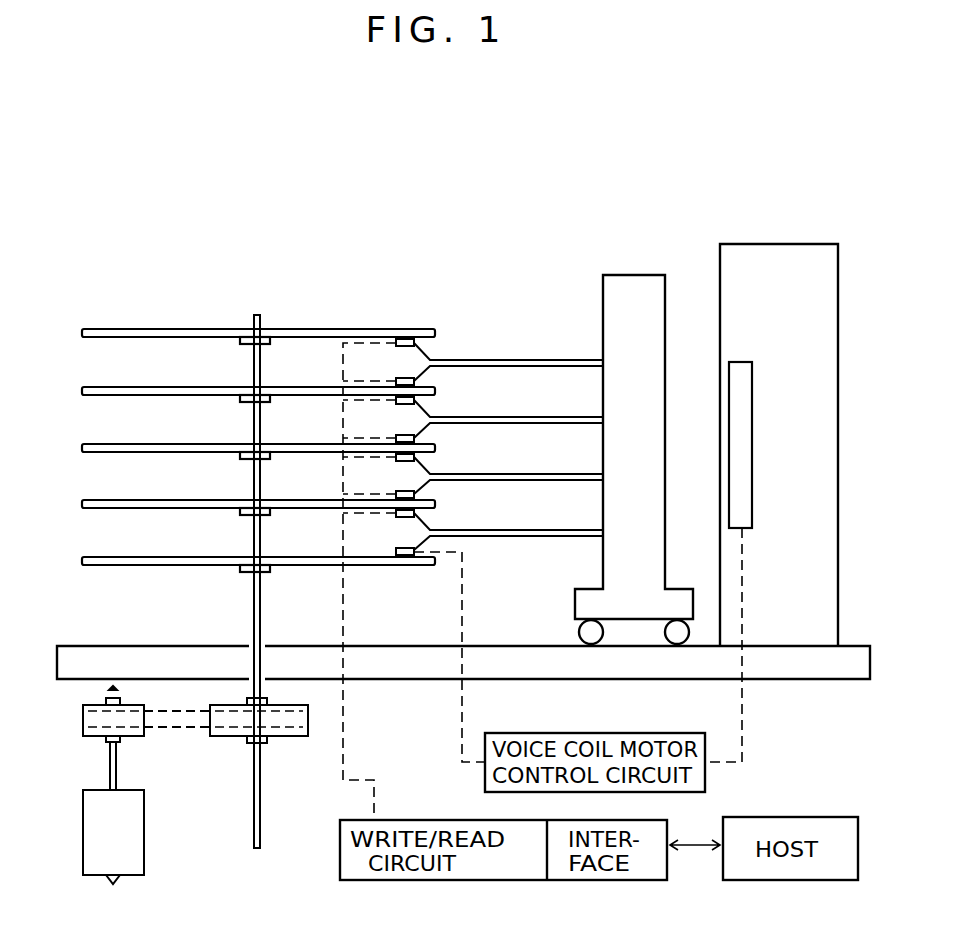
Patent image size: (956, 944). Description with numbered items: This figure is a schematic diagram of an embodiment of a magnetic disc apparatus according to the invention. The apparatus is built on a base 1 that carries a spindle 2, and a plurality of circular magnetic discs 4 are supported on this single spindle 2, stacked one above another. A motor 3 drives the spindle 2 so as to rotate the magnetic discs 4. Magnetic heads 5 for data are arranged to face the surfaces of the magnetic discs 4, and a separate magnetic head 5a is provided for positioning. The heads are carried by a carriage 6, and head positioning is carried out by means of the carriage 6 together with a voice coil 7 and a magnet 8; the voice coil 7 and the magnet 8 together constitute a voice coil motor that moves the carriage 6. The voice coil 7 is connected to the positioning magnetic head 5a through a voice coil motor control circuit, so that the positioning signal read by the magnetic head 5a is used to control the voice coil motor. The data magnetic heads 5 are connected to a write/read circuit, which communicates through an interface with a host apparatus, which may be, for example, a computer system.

The base 1 is at (404, 672).
The spindle 2 is at (253, 600).
The motor 3 is at (146, 840).
The magnetic discs 4 is at (343, 328).
The magnetic heads for data 5 is at (416, 434).
The magnetic head for positioning 5a is at (405, 565).
The carriage 6 is at (643, 282).
The voice coil 7 is at (748, 437).
The magnet 8 is at (799, 245).